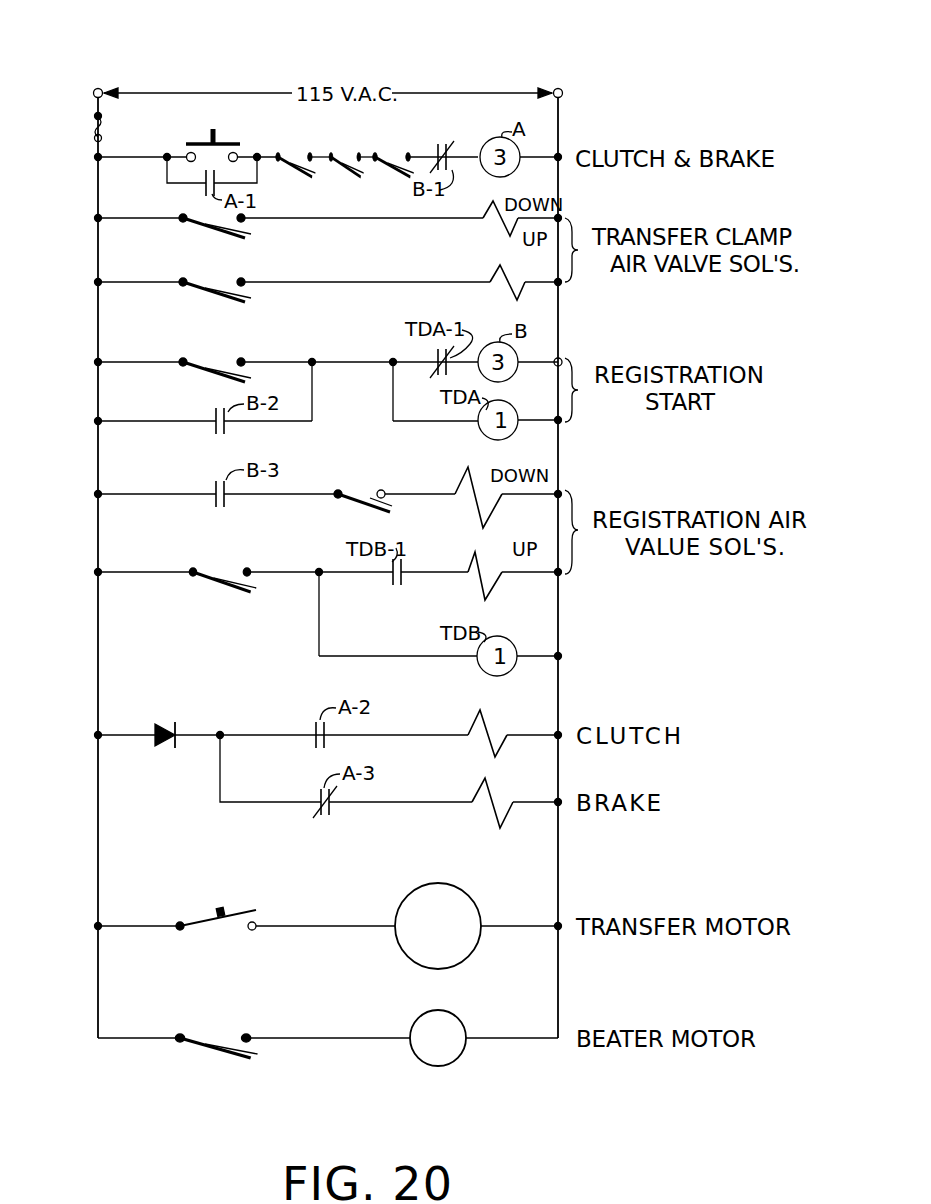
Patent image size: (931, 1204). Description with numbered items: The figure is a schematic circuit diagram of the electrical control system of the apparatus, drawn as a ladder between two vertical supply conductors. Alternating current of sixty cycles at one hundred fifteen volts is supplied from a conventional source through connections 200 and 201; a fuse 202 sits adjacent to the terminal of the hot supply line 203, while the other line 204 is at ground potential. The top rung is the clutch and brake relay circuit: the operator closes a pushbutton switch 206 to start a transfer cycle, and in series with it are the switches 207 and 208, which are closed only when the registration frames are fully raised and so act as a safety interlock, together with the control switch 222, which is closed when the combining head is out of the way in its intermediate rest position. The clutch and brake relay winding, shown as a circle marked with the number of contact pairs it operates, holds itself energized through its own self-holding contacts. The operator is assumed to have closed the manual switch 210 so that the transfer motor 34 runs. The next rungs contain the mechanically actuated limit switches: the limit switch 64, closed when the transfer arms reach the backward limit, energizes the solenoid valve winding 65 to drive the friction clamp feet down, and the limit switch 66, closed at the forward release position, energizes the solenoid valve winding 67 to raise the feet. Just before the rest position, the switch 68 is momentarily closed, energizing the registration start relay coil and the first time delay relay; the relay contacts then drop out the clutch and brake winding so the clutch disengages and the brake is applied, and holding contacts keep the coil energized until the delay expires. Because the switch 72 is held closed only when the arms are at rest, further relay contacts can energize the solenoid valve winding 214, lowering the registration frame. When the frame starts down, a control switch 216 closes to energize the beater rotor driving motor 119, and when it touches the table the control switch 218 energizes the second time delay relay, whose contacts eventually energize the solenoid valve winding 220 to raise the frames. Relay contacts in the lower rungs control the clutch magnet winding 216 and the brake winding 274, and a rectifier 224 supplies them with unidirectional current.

The alternating current source connection 200 is at (98, 88).
The alternating current source connection 201 is at (558, 88).
The fuse 202 is at (96, 124).
The hot supply line 203 is at (98, 635).
The ground potential line 204 is at (558, 629).
The pushbutton switch 206 is at (213, 134).
The switch 207 is at (300, 162).
The switch 208 is at (340, 162).
The control switch 222 is at (392, 160).
The limit switch 64 is at (215, 226).
The solenoid valve winding 65 is at (488, 206).
The limit switch 66 is at (215, 292).
The solenoid valve winding 67 is at (508, 290).
The switch 68 is at (215, 372).
The switch 72 is at (368, 500).
The solenoid valve winding 214 is at (460, 478).
The control switch 218 is at (212, 580).
The solenoid valve winding 220 is at (470, 560).
The rectifier 224 is at (166, 722).
The clutch magnet winding 216 is at (484, 720).
The brake solenoid 274 is at (478, 805).
The manual switch 210 is at (233, 916).
The transfer motor 34 is at (456, 962).
The beater rotor driving motor 119 is at (450, 1062).